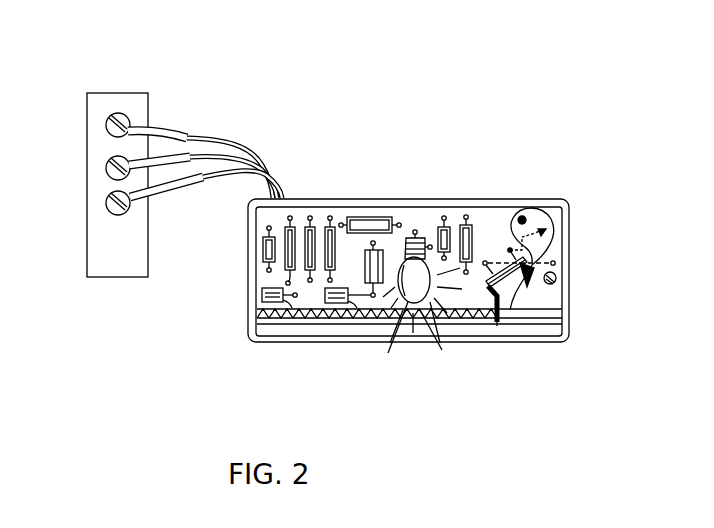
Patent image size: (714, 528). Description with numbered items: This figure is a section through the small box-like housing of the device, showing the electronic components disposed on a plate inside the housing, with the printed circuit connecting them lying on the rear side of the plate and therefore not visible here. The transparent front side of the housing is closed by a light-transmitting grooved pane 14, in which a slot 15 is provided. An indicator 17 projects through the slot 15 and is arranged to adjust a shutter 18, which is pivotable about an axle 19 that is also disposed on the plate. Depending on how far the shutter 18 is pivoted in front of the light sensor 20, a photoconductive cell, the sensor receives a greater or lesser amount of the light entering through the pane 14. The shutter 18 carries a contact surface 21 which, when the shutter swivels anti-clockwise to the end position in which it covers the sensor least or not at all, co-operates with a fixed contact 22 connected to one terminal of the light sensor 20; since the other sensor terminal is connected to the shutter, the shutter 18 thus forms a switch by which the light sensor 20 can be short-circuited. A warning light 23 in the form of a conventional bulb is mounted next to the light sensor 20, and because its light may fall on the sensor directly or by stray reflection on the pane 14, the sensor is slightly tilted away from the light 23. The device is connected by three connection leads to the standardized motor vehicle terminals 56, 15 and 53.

The grooved pane 14 is at (432, 306).
The slot 15 is at (105, 168).
The indicator 17 is at (497, 326).
The shutter 18 is at (510, 290).
The axle 19 is at (524, 216).
The light sensor 20 is at (484, 260).
The contact surface 21 is at (533, 268).
The fixed contact 22 is at (557, 276).
The warning light 23 is at (393, 267).
The terminal 53 is at (105, 203).
The terminal 56 is at (120, 113).